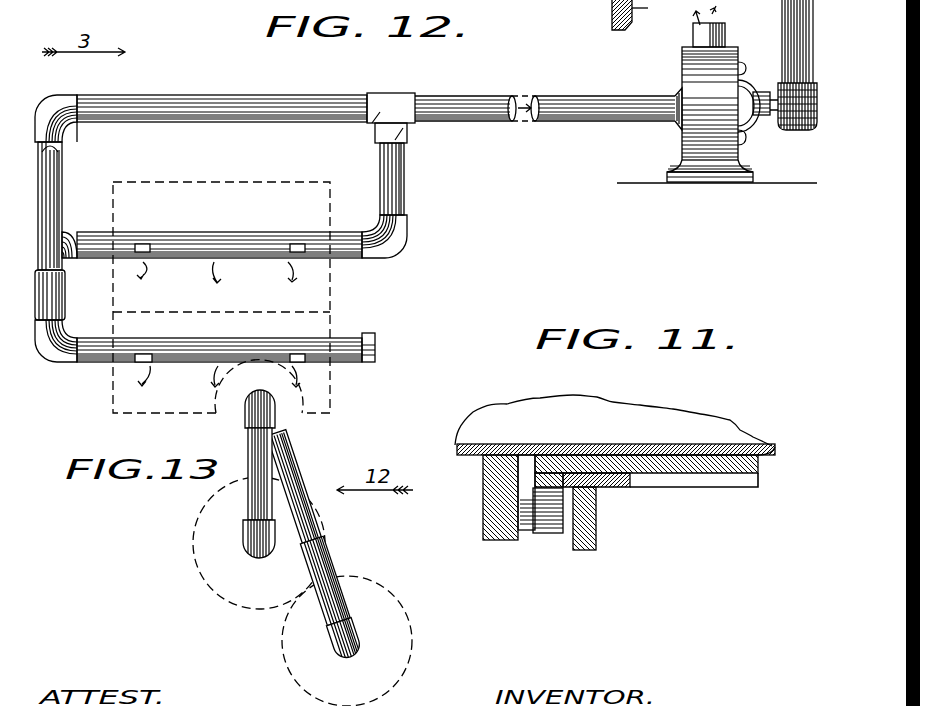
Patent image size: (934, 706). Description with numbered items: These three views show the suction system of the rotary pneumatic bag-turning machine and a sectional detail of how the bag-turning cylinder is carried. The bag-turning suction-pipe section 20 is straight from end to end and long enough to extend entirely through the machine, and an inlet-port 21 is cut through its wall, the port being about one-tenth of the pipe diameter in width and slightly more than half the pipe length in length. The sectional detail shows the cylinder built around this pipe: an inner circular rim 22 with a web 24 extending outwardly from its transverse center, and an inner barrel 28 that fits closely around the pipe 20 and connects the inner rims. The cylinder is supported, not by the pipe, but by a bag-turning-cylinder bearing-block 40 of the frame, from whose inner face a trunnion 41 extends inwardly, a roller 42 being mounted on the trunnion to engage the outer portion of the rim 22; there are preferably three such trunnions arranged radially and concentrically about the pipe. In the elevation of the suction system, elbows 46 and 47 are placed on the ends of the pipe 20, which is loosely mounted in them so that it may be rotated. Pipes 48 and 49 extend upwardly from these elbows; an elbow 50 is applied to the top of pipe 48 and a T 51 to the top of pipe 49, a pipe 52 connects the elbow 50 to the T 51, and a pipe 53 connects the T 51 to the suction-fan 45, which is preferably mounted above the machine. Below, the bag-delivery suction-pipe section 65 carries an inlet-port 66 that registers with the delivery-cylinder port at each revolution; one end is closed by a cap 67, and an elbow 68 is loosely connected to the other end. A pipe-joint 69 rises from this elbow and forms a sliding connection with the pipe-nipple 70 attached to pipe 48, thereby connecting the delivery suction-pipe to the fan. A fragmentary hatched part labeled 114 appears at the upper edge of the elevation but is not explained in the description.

In FIG. 12, the bag-turning suction-pipe section 20 is at (145, 243).
In FIG. 11, the bag-turning suction-pipe section 20 is at (603, 434).
In FIG. 12, the inlet-port 21 is at (206, 250).
In FIG. 11, the inner circular rim 22 is at (630, 482).
In FIG. 11, the web 24 is at (596, 523).
In FIG. 11, the inner barrel 28 is at (729, 476).
In FIG. 11, the bag-turning-cylinder bearing-block 40 is at (483, 503).
In FIG. 11, the trunnion 41 is at (527, 531).
In FIG. 11, the roller 42 is at (553, 534).
In FIG. 12, the suction-fan 45 is at (686, 67).
In FIG. 12, the elbow 46 is at (68, 233).
In FIG. 13, the elbow 46 is at (247, 548).
In FIG. 12, the elbow 47 is at (407, 229).
In FIG. 12, the pipe 48 is at (62, 153).
In FIG. 13, the pipe 48 is at (250, 505).
In FIG. 12, the pipe 49 is at (411, 179).
In FIG. 12, the elbow 50 is at (55, 100).
In FIG. 13, the elbow 50 is at (247, 420).
In FIG. 12, the T 51 is at (389, 100).
In FIG. 12, the pipe 52 is at (247, 100).
In FIG. 12, the pipe 53 is at (491, 96).
In FIG. 12, the bag-delivery suction-pipe section 65 is at (340, 337).
In FIG. 12, the inlet-port 66 is at (219, 382).
In FIG. 12, the cap 67 is at (387, 335).
In FIG. 12, the elbow 68 is at (67, 336).
In FIG. 13, the elbow 68 is at (341, 648).
In FIG. 12, the pipe-joint 69 is at (65, 291).
In FIG. 13, the pipe-joint 69 is at (331, 573).
In FIG. 12, the pipe-nipple 70 is at (56, 192).
In FIG. 13, the pipe-nipple 70 is at (293, 487).
In FIG. 12, the bracket 114 is at (664, 15).